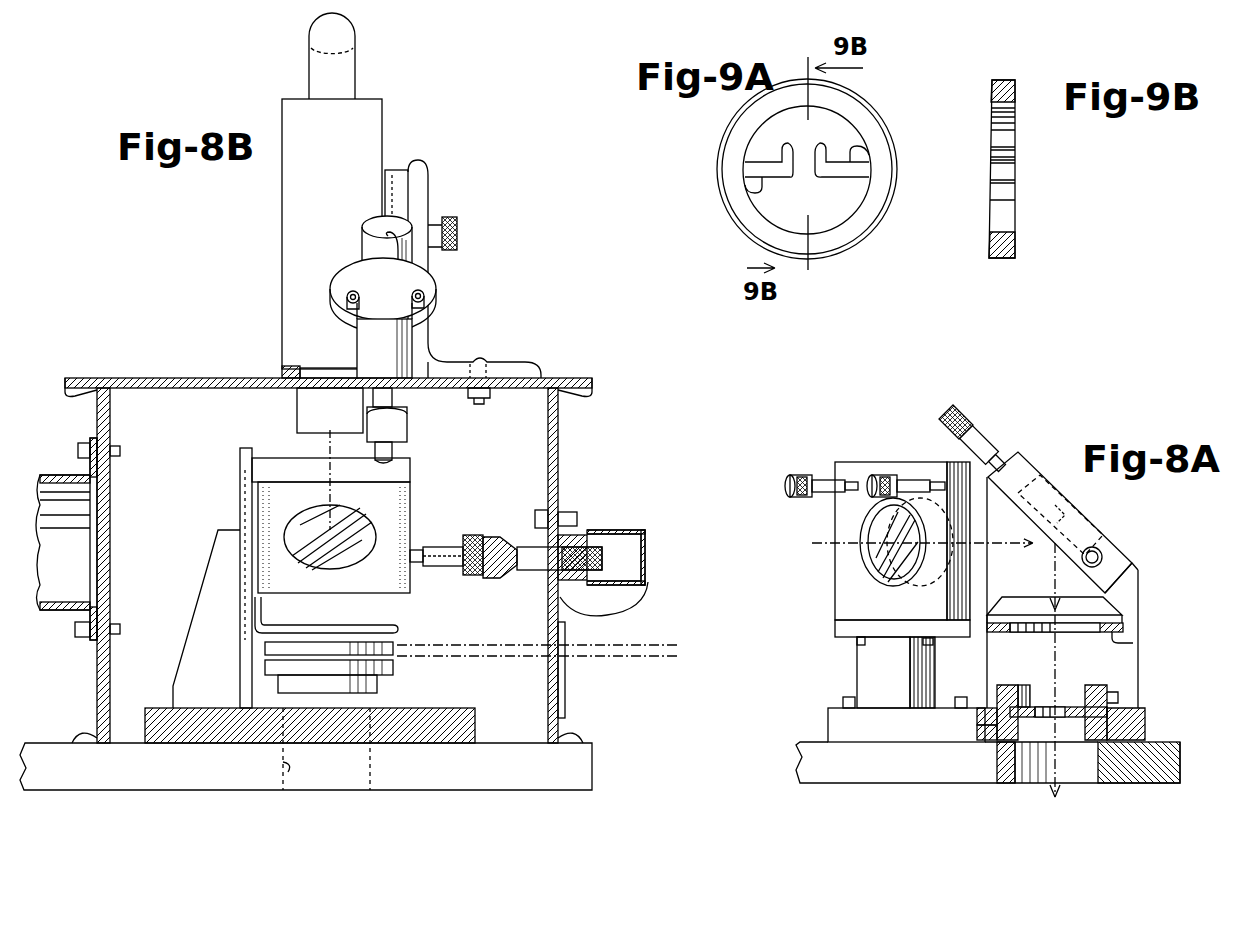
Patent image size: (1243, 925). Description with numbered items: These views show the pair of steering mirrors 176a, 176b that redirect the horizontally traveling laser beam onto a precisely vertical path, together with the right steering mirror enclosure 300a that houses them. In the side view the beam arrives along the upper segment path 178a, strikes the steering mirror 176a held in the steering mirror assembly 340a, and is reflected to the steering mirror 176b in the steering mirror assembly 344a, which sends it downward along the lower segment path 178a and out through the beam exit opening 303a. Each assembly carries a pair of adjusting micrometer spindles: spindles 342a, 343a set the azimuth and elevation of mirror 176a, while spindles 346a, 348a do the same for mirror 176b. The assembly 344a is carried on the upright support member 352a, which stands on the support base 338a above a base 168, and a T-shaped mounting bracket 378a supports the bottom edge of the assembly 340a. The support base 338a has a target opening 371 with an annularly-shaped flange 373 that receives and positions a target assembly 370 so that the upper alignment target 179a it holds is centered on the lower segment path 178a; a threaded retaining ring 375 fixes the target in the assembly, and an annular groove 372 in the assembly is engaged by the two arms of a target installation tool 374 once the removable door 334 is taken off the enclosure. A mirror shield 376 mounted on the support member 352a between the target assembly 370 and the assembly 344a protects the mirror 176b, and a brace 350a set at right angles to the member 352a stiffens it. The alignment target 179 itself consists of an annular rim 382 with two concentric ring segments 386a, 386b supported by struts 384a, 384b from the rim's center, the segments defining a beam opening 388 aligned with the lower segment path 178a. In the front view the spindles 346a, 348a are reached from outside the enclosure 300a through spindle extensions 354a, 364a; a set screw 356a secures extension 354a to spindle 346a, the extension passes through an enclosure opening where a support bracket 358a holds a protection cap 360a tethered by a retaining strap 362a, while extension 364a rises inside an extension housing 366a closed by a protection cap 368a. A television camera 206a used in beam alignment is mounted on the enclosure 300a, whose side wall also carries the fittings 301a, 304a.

In FIG. 8B, the television camera 206a is at (382, 133).
In FIG. 8B, the protection cap 368a is at (408, 256).
In FIG. 8B, the extension housing 366a is at (410, 345).
In FIG. 8B, the right steering mirror enclosure 300a is at (570, 473).
In FIG. 8B, the base plate 168 is at (592, 762).
In FIG. 8B, the support base 338a is at (327, 711).
In FIG. 8A, the support base 338a is at (1145, 713).
In FIG. 8B, the beam exit opening 303a is at (280, 761).
In FIG. 8A, the beam exit opening 303a is at (1087, 760).
In FIG. 8B, the port tube 304a is at (67, 474).
In FIG. 8B, the mounting plate 301a is at (108, 482).
In FIG. 8B, the brace 350a is at (210, 594).
In FIG. 8B, the support member 352a is at (244, 448).
In FIG. 8A, the support member 352a is at (1128, 662).
In FIG. 8B, the steering mirror assembly 344a is at (275, 458).
In FIG. 8A, the steering mirror assembly 344a is at (1040, 452).
In FIG. 8B, the steering mirror 176b is at (362, 520).
In FIG. 8A, the steering mirror 176b is at (1085, 525).
In FIG. 8B, the spindle extension 364a is at (393, 398).
In FIG. 8B, the adjusting micrometer spindle 348a is at (395, 444).
In FIG. 8A, the adjusting micrometer spindle 348a is at (980, 428).
In FIG. 8B, the adjusting micrometer spindle 346a is at (443, 547).
In FIG. 8A, the adjusting micrometer spindle 346a is at (1102, 556).
In FIG. 8B, the set screw 356a is at (478, 535).
In FIG. 8B, the spindle extension 354a is at (510, 576).
In FIG. 8B, the support bracket 358a is at (560, 506).
In FIG. 8B, the protection cap 360a is at (618, 528).
In FIG. 8B, the retaining strap 362a is at (614, 616).
In FIG. 8B, the mirror shield 376 is at (268, 623).
In FIG. 8A, the mirror shield 376 is at (1133, 643).
In FIG. 8B, the annular groove 372 is at (268, 650).
In FIG. 8A, the annular groove 372 is at (992, 692).
In FIG. 8B, the annularly-shaped flange 373 is at (268, 668).
In FIG. 8A, the annularly-shaped flange 373 is at (977, 717).
In FIG. 8B, the target assembly 370 is at (406, 674).
In FIG. 8A, the target assembly 370 is at (1137, 702).
In FIG. 8B, the target installation tool 374 is at (448, 645).
In FIG. 8B, the removable door 334 is at (565, 694).
In FIG. 9A, the alignment target 179 is at (713, 133).
In FIG. 9B, the alignment target 179 is at (980, 86).
In FIG. 9A, the annular rim 382 is at (865, 110).
In FIG. 9B, the annular rim 382 is at (1010, 85).
In FIG. 9A, the ring segment 386b is at (788, 160).
In FIG. 9B, the ring segment 386b is at (1005, 145).
In FIG. 9A, the ring segment 386a is at (838, 178).
In FIG. 9A, the strut 384a is at (852, 160).
In FIG. 9A, the strut 384b is at (747, 182).
In FIG. 9B, the beam opening 388 is at (1013, 163).
In FIG. 8A, the beam opening 388 is at (1015, 732).
In FIG. 8A, the steering mirror assembly 340a is at (835, 590).
In FIG. 8A, the T-shaped mounting bracket 378a is at (880, 662).
In FIG. 8A, the steering mirror 176a is at (880, 525).
In FIG. 8A, the segment path 178a is at (842, 545).
In FIG. 8A, the adjusting micrometer spindle 343a is at (822, 475).
In FIG. 8A, the adjusting micrometer spindle 342a is at (912, 475).
In FIG. 8A, the upper alignment target 179a is at (1034, 676).
In FIG. 8A, the retaining ring 375 is at (1016, 685).
In FIG. 8A, the target opening 371 is at (977, 734).